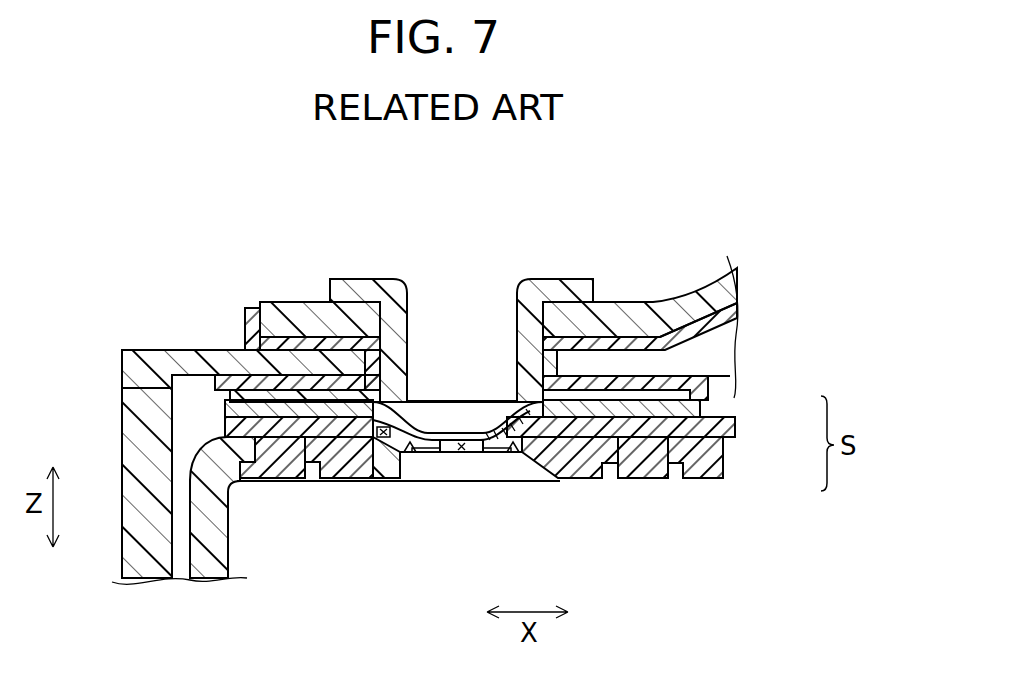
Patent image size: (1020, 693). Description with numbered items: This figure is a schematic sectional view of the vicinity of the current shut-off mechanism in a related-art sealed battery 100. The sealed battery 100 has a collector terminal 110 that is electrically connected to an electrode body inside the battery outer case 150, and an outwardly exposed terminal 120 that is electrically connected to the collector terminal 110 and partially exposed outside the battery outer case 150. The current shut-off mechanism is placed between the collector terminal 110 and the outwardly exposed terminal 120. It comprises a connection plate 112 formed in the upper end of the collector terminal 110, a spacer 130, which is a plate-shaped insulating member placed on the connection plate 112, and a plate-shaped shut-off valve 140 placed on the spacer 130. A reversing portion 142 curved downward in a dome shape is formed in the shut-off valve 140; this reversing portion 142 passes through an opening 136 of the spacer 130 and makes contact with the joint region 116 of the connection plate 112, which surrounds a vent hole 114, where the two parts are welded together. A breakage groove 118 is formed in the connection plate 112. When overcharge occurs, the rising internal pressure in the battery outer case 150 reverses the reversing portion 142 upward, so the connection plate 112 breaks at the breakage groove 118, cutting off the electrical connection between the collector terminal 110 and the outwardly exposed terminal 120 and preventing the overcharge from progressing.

The sealed battery 100 is at (799, 166).
The collector terminal 110 is at (226, 557).
The connection plate 112 is at (724, 458).
The vent hole 114 is at (462, 454).
The joint region 116 is at (428, 453).
The breakage groove 118 is at (408, 454).
The outwardly exposed terminal 120 is at (357, 292).
The spacer 130 is at (736, 426).
The opening 136 is at (383, 440).
The shut-off valve 140 is at (701, 408).
The reversing portion 142 is at (449, 432).
The battery outer case 150 is at (150, 350).